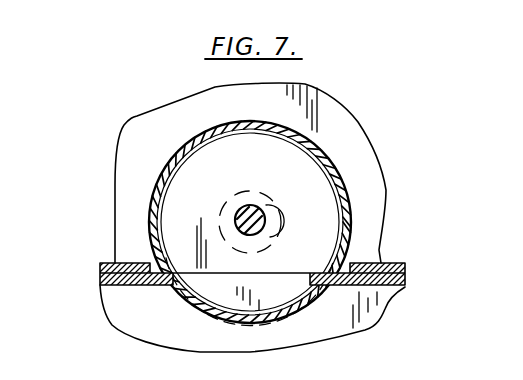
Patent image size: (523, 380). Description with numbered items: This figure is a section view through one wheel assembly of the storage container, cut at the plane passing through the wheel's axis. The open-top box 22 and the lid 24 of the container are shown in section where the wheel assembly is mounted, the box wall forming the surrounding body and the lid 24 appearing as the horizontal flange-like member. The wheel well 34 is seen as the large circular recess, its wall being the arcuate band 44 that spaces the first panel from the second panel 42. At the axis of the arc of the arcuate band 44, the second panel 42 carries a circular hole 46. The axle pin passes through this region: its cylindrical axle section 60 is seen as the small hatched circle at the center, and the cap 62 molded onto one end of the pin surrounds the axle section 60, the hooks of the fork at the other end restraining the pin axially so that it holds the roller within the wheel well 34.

The open-top box 22 is at (113, 210).
The lid 24 is at (124, 286).
The wheel well 34 is at (157, 167).
The second panel 42 is at (152, 286).
The arcuate band 44 is at (323, 152).
The circular hole 46 is at (250, 206).
The cylindrical axle section 60 is at (265, 225).
The cap 62 is at (241, 192).